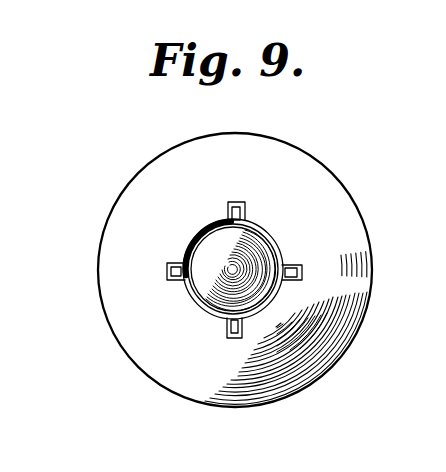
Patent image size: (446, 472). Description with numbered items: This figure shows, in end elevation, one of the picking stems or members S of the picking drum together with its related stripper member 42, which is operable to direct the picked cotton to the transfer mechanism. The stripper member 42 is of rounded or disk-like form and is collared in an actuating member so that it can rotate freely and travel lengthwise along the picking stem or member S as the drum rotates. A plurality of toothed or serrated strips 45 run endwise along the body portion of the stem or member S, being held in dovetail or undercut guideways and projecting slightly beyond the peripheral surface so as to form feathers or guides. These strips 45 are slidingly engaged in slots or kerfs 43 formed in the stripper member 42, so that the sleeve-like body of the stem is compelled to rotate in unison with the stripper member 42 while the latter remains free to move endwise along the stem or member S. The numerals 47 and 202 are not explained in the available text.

The stripper member 42 is at (352, 200).
The slots or kerfs 43 is at (230, 333).
The toothed or serrated strips 45 is at (187, 262).
The lens ring 47 is at (233, 269).
The bottom lug pin 202 is at (233, 341).
The picking stem or member S is at (246, 242).